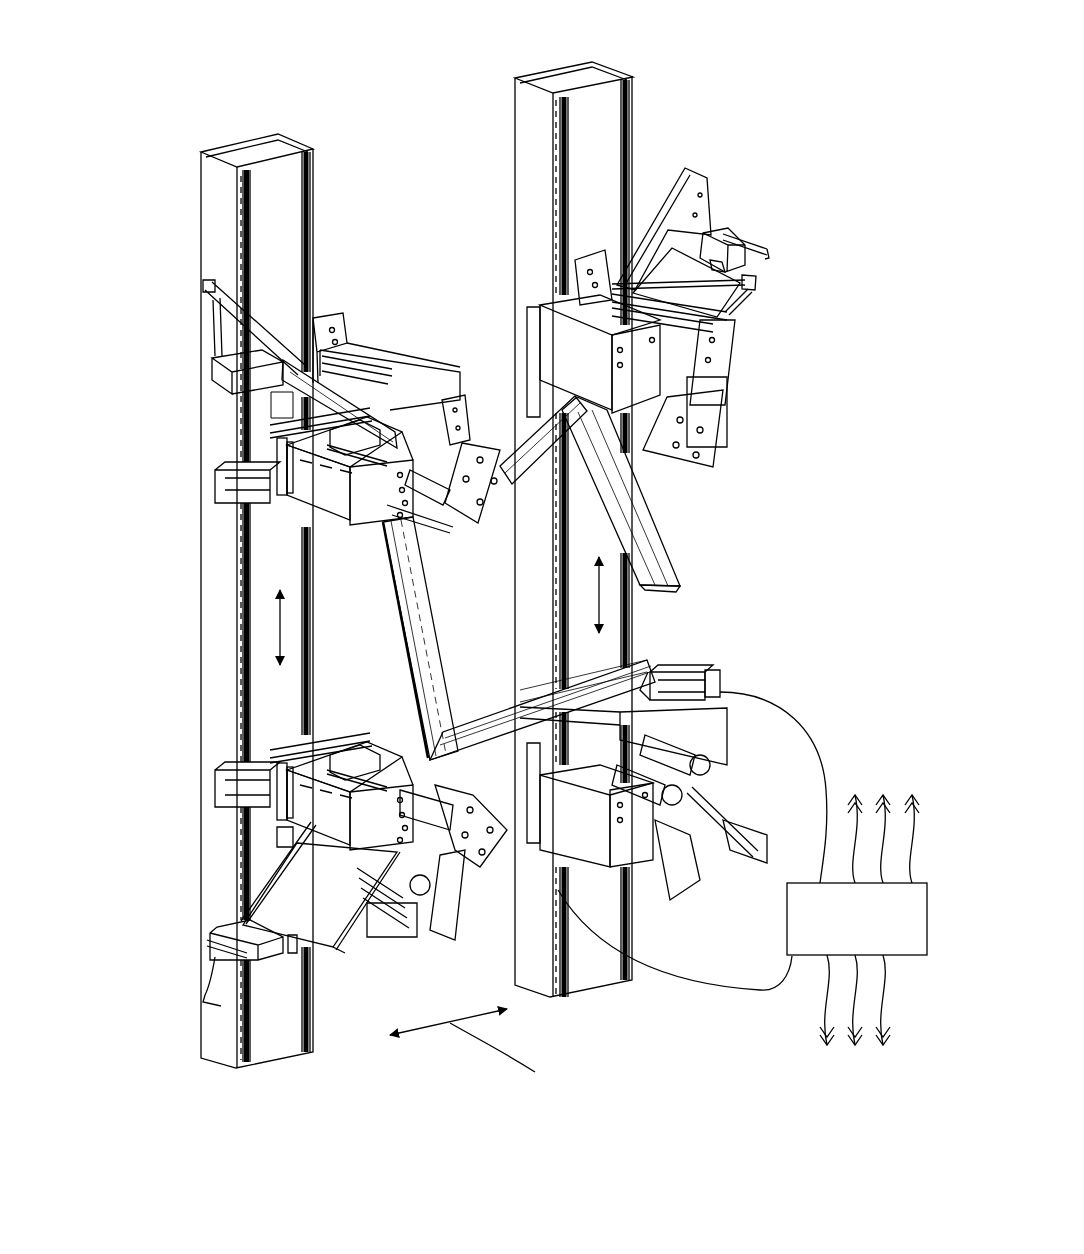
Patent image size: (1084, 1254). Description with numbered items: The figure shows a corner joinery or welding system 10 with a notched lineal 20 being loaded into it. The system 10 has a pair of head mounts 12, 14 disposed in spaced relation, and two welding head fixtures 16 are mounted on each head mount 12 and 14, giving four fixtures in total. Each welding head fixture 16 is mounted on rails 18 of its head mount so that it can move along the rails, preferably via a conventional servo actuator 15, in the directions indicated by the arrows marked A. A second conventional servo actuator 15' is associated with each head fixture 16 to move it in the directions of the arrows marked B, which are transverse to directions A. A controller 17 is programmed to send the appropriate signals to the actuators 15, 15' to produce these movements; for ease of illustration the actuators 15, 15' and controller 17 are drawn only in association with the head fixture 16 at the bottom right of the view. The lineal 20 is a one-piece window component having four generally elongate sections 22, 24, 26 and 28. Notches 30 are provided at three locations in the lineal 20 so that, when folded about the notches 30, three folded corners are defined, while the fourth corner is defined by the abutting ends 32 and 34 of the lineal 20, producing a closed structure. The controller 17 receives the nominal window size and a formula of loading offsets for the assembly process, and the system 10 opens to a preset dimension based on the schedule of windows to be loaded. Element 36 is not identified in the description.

The corner joinery system 10 is at (390, 147).
The head mount 12 is at (628, 73).
The head mount 14 is at (208, 170).
The servo actuator 15 is at (334, 684).
The second servo actuator 15' is at (736, 677).
The welding head fixture 16 is at (356, 333).
The controller 17 is at (845, 933).
The rails 18 is at (635, 138).
The lineal 20 is at (544, 578).
The elongate section 22 is at (487, 717).
The elongate section 24 is at (430, 637).
The elongate section 26 is at (532, 470).
The elongate section 28 is at (660, 535).
The notches 30 is at (557, 487).
The abutting end 32 is at (633, 668).
The abutting end 34 is at (662, 583).
The clamp arm 36 is at (400, 413).